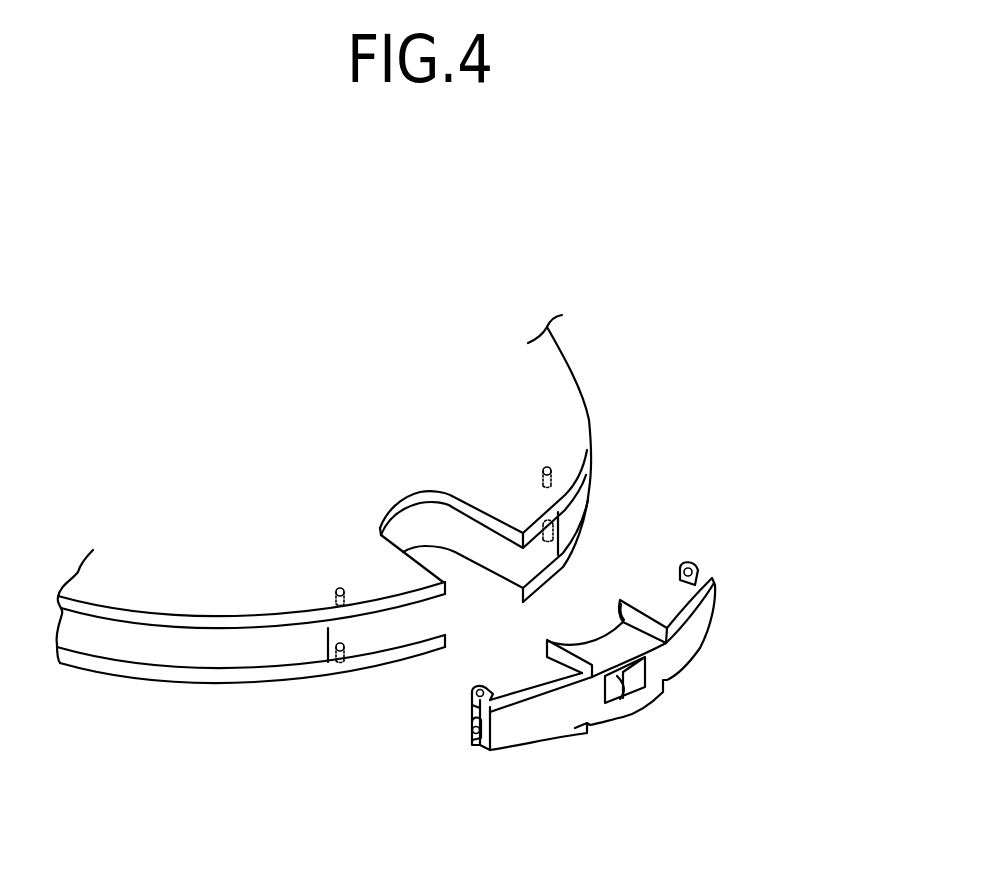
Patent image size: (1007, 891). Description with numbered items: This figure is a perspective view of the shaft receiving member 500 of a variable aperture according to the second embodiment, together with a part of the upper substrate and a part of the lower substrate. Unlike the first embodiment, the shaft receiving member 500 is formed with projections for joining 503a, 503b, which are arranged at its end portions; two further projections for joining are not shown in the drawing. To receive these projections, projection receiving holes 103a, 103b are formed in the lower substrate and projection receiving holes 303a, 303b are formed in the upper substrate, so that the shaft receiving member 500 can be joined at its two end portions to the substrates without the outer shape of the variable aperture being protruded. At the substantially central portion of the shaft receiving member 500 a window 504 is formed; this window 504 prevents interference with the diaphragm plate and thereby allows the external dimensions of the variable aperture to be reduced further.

The projection receiving hole 303a is at (548, 467).
The projection receiving hole 303b is at (338, 588).
The projection receiving hole 103a is at (547, 527).
The projection receiving hole 103b is at (345, 647).
The shaft receiving member 500 is at (619, 665).
The projection for joining 503a is at (690, 568).
The projection for joining 503b is at (476, 693).
The window 504 is at (645, 672).